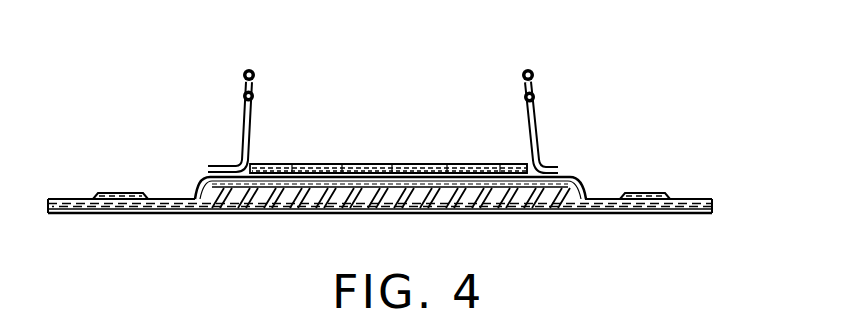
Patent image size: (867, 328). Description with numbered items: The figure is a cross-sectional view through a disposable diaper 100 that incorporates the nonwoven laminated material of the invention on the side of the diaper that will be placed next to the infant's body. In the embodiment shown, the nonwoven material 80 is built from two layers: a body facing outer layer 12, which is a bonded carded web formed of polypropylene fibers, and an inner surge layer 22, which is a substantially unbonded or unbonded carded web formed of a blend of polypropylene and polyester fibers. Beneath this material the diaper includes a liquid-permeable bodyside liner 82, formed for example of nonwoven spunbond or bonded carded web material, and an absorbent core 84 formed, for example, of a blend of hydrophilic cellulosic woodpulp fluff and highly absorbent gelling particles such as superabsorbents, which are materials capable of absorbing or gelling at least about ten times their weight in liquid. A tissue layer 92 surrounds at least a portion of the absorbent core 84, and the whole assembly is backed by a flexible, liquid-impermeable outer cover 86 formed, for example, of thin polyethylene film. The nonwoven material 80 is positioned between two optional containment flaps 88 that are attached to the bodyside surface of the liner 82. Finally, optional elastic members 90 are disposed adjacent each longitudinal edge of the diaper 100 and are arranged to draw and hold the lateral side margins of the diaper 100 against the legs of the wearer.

The disposable diaper 100 is at (653, 50).
The outer cover 86 is at (272, 213).
The elastic members 90 is at (117, 192).
The bodyside liner 82 is at (583, 172).
The absorbent core 84 is at (540, 200).
The nonwoven material 80 is at (412, 163).
The tissue layer 92 is at (308, 163).
The surge layer 22 is at (258, 163).
The containment flaps 88 is at (541, 110).
The body facing outer layer 12 is at (518, 163).